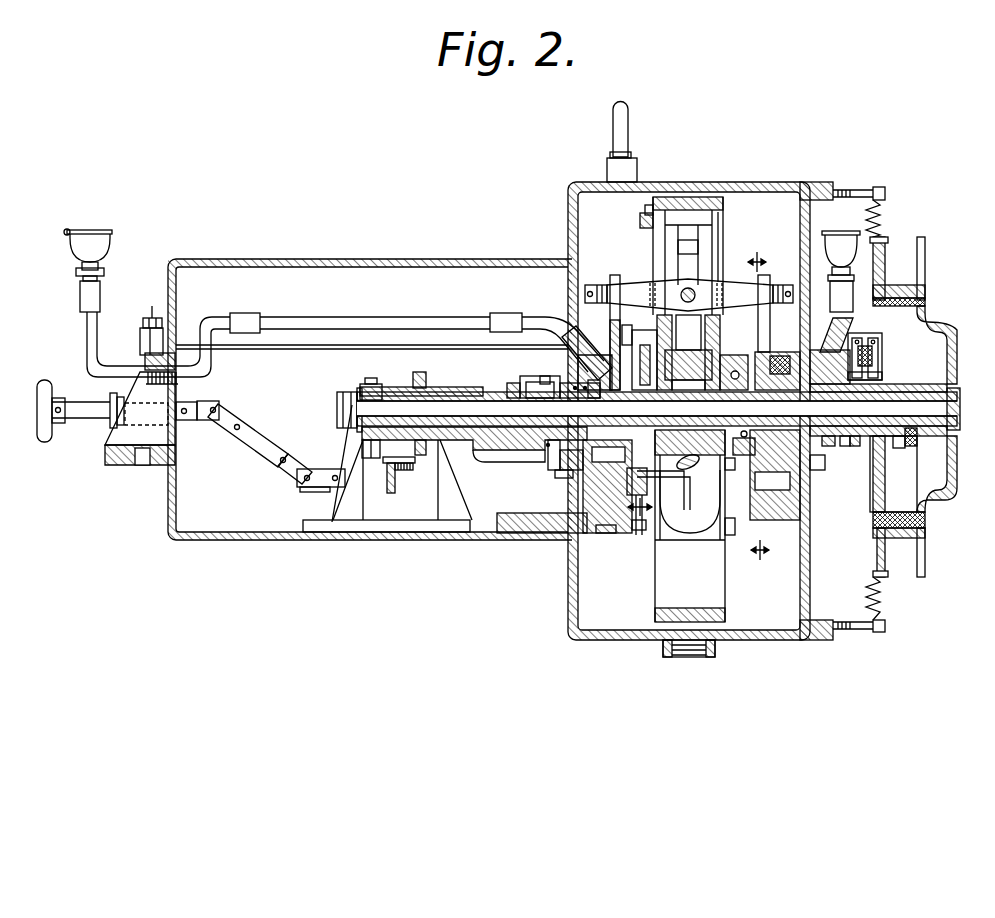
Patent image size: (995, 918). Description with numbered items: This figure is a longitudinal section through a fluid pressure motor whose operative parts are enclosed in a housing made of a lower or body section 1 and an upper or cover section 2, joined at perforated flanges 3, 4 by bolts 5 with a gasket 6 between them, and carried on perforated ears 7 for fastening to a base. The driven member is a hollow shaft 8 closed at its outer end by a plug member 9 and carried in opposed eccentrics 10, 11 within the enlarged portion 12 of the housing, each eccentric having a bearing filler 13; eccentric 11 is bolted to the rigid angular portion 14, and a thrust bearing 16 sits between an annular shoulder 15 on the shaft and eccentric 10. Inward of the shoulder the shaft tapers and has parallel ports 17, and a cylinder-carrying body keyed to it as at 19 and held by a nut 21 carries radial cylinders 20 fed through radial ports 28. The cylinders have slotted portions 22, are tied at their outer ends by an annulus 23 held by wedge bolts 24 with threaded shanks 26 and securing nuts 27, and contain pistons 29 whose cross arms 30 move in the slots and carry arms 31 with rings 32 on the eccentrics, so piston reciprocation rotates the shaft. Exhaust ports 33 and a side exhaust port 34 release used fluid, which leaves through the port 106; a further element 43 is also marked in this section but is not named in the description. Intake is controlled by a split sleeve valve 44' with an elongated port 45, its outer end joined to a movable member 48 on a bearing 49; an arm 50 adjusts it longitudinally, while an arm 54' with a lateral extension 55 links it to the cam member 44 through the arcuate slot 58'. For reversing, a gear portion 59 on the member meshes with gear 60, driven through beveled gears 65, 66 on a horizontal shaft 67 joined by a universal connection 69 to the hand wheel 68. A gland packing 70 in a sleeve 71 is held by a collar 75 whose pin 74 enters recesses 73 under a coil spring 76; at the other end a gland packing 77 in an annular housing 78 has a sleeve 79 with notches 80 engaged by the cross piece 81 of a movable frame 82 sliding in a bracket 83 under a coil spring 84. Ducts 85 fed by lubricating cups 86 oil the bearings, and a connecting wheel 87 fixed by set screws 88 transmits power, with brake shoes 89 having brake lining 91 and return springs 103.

The lower or body section 1 is at (622, 640).
The upper or cover section 2 is at (568, 220).
The perforated flange 3 is at (142, 354).
The perforated flange 4 is at (140, 334).
The bolts 5 is at (152, 308).
The gasket 6 is at (142, 345).
The perforated ears 7 is at (758, 407).
The hollow shaft 8 is at (636, 330).
The plug member 9 is at (960, 406).
The eccentric 10 is at (802, 492).
The eccentric 11 is at (585, 500).
The enlarged portion 12 is at (748, 184).
The bearing filler 13 is at (592, 455).
The rigid angular portion 14 is at (575, 478).
The annular shoulder 15 is at (744, 452).
The thrust bearing 16 is at (738, 378).
The ports 17 is at (690, 362).
The key 19 is at (657, 408).
The cylinders 20 is at (722, 240).
The nut 21 is at (646, 212).
The slotted portions 22 is at (704, 253).
The annulus 23 is at (726, 612).
The wedge bolts 24 is at (674, 200).
The reduced threaded shank 26 is at (640, 222).
The securing nut 27 is at (640, 540).
The radial ports 28 is at (691, 242).
The pistons 29 is at (688, 374).
The cross arms 30 is at (690, 287).
The arms 31 is at (615, 276).
The rings 32 is at (772, 354).
The exhaust ports 33 is at (652, 292).
The exhaust port 34 is at (716, 298).
The nut 43 is at (637, 522).
The cam member 44 is at (588, 326).
The valve 44' is at (657, 408).
The elongated port 45 is at (657, 409).
The movable member 48 is at (440, 388).
The bearing 49 is at (345, 520).
The arm 50 is at (370, 386).
The arm 54' is at (507, 461).
The lateral extension 55 is at (552, 470).
The arcuate slot 58' is at (542, 515).
The gear portion 59 is at (470, 427).
The rotatable gear 60 is at (418, 374).
The beveled gear 65 is at (404, 468).
The beveled gear 66 is at (392, 484).
The horizontal shaft 67 is at (300, 488).
The hand wheel 68 is at (46, 385).
The universal connection 69 is at (233, 425).
The gland packing 70 is at (556, 448).
The sleeve 71 is at (588, 386).
The recesses 73 is at (508, 388).
The pin 74 is at (522, 382).
The locking collar 75 is at (562, 385).
The coil spring 76 is at (575, 384).
The gland packing 77 is at (828, 446).
The annular housing 78 is at (540, 380).
The sleeve 79 is at (846, 446).
The notches 80 is at (906, 446).
The cross piece 81 is at (878, 364).
The movable frame 82 is at (880, 336).
The bracket 83 is at (880, 347).
The coil spring 84 is at (880, 357).
The ducts 85 is at (578, 356).
The lubricating cups 86 is at (100, 251).
The connecting wheel 87 is at (958, 498).
The set screws 88 is at (898, 450).
The brake shoes 89 is at (926, 268).
The brake lining 91 is at (926, 301).
The springs 103 is at (882, 222).
The port 106 is at (692, 658).